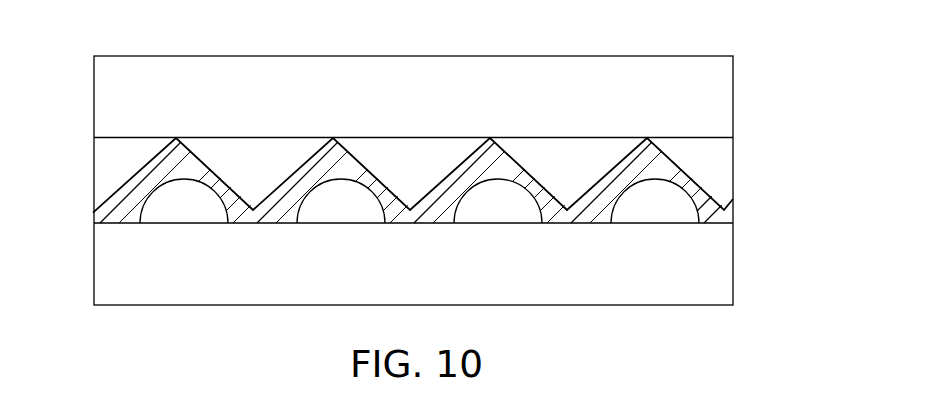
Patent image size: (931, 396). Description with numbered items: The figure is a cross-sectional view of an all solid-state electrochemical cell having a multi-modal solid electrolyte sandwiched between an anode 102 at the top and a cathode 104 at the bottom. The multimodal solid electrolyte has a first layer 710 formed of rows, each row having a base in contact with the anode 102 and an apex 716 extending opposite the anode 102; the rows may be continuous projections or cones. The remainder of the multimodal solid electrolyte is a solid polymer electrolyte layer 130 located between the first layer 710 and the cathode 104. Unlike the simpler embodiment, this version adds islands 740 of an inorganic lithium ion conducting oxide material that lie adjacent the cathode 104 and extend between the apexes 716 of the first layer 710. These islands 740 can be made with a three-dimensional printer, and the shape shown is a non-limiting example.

The anode 102 is at (702, 92).
The cathode 104 is at (702, 282).
The solid polymer electrolyte layer 130 is at (703, 213).
The first layer 710 is at (118, 161).
The apex 716 is at (252, 207).
The islands 740 is at (176, 205).